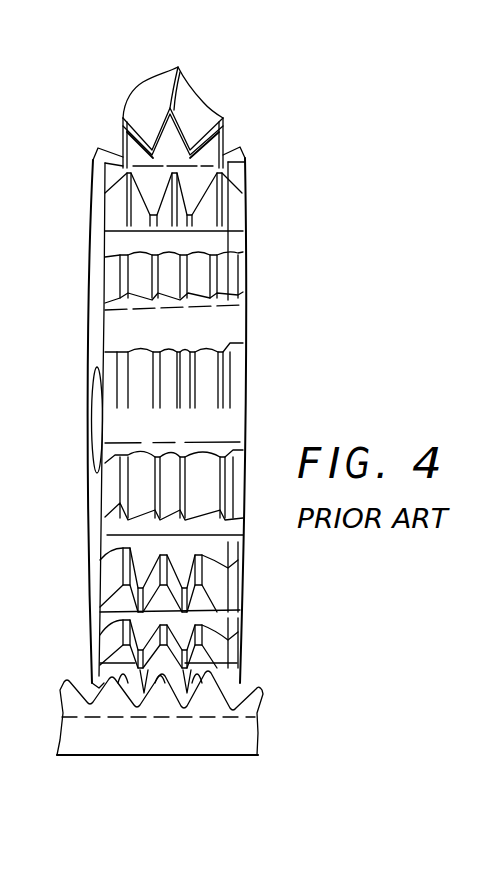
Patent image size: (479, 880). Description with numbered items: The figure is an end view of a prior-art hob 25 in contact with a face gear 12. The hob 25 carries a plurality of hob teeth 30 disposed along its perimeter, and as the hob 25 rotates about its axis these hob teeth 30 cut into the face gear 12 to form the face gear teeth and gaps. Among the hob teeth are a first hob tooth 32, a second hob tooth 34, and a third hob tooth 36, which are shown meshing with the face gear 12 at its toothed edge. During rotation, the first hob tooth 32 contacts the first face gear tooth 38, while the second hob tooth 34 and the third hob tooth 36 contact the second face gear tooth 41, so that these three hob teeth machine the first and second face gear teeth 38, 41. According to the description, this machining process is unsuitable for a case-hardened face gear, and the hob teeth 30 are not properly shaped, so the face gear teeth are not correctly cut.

The face gear 12 is at (57, 741).
The hob 25 is at (247, 380).
The hob teeth 30 is at (173, 102).
The first hob tooth 32 is at (92, 688).
The second hob tooth 34 is at (135, 662).
The third hob tooth 36 is at (185, 665).
The first face gear tooth 38 is at (115, 678).
The second face gear tooth 41 is at (157, 673).